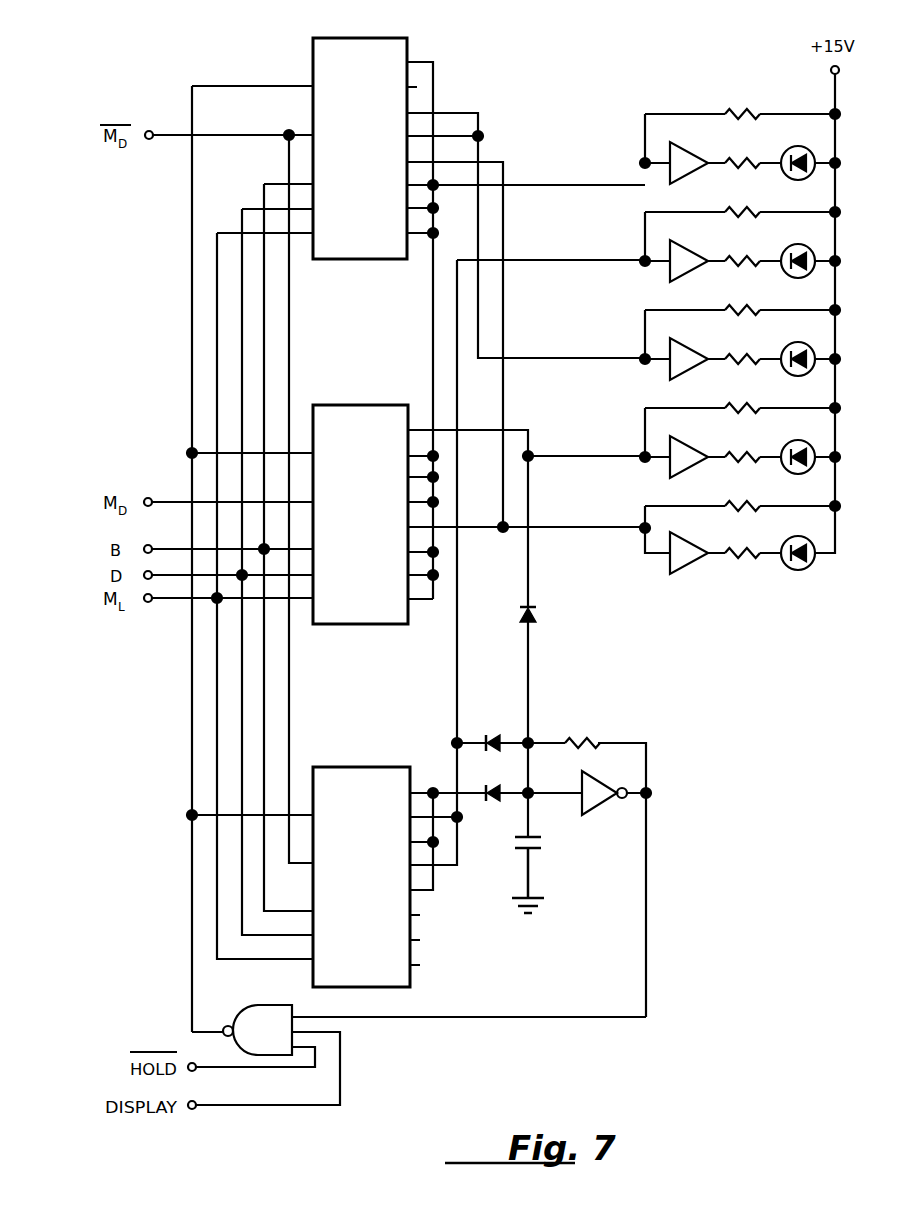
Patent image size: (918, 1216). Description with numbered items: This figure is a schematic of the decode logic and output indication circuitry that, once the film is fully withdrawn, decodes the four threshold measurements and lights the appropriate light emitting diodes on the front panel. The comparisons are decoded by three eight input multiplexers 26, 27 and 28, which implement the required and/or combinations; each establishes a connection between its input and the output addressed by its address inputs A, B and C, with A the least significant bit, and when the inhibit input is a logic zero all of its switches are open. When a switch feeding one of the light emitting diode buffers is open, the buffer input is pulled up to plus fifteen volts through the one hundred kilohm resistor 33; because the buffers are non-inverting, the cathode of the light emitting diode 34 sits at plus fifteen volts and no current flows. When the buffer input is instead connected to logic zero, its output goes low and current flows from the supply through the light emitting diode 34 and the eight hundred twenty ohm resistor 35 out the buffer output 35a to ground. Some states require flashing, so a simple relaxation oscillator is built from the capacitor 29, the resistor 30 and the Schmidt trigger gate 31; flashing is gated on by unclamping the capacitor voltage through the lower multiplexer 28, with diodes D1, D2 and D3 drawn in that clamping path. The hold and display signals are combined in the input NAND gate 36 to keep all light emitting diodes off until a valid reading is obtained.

The eight input multiplexer 26 is at (359, 60).
The eight input multiplexer 27 is at (351, 420).
The eight input multiplexer 28 is at (354, 785).
The capacitor 29 is at (537, 849).
The resistor 30 is at (580, 739).
The Schmidt trigger gate 31 is at (598, 801).
The resistor 33 is at (746, 508).
The light emitting diode 34 is at (800, 580).
The resistor 35 is at (742, 574).
The buffer output 35a is at (685, 582).
The input NAND gate 36 is at (262, 1022).
The diode D1 is at (545, 612).
The diode D2 is at (495, 737).
The diode D3 is at (495, 801).